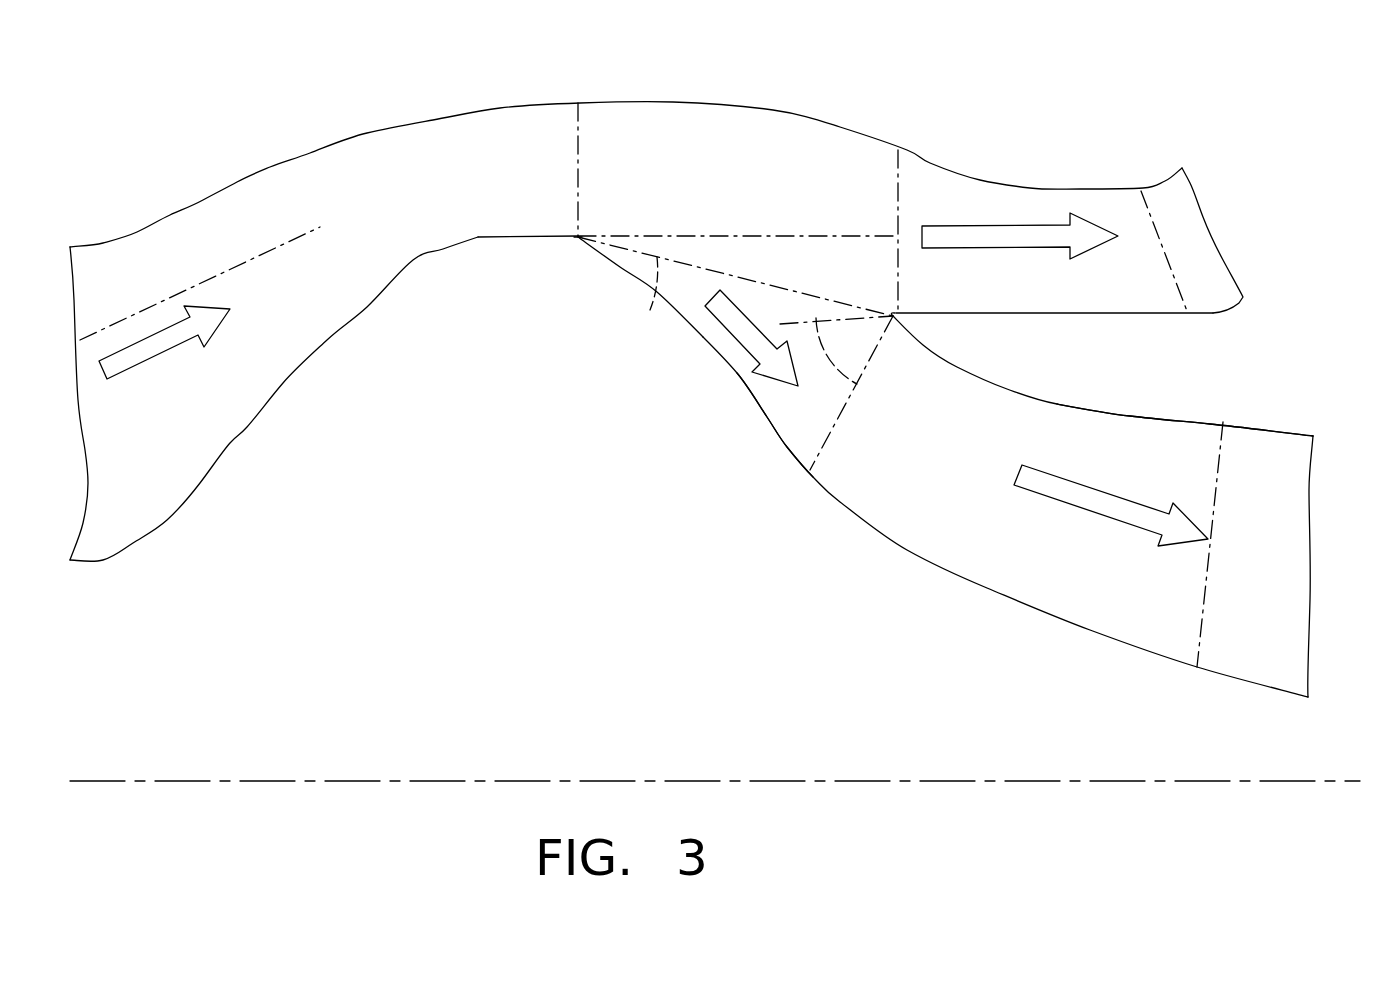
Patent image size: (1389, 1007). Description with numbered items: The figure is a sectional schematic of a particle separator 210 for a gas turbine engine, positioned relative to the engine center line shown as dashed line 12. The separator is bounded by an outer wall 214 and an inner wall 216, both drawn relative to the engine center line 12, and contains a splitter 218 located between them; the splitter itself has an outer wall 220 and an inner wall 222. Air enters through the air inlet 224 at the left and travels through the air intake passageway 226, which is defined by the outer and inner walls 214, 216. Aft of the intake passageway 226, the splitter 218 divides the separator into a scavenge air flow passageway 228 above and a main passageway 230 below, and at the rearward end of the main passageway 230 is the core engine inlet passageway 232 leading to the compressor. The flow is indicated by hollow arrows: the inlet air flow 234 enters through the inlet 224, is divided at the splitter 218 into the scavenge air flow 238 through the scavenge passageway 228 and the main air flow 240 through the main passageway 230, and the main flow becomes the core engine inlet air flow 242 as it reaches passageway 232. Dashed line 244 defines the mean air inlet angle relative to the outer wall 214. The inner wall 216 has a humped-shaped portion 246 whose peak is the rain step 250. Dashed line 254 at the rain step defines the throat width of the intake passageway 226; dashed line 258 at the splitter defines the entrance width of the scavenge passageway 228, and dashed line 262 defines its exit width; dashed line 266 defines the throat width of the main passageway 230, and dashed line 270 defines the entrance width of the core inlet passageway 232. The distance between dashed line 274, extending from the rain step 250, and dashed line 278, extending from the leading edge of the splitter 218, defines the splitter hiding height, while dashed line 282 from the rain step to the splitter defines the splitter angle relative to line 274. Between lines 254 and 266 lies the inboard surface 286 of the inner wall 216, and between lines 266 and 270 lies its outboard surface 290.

The engine center line 12 is at (620, 779).
The particle separator 210 is at (295, 74).
The outer wall 214 is at (443, 113).
The inner wall 216 is at (484, 238).
The splitter 218 is at (1066, 360).
The outer wall of splitter 220 is at (1146, 310).
The inner wall of splitter 222 is at (1170, 420).
The air inlet 224 is at (138, 430).
The air intake passageway 226 is at (420, 244).
The scavenge air flow passageway 228 is at (1118, 188).
The main passageway 230 is at (780, 434).
The core engine inlet passageway 232 is at (1255, 507).
The inlet air flow arrow 234 is at (143, 355).
The scavenge air flow arrow 238 is at (1022, 236).
The main air flow arrow 240 is at (757, 348).
The core engine inlet air flow arrow 242 is at (1118, 517).
The mean air inlet angle line 244 is at (232, 268).
The humped-shaped portion 246 is at (456, 436).
The rain step 250 is at (575, 266).
The throat width line 254 is at (582, 150).
The scavenge entrance width line 258 is at (898, 176).
The scavenge exit width line 262 is at (1165, 251).
The main passageway throat width line 266 is at (838, 428).
The core inlet entrance width line 270 is at (1205, 588).
The rain step reference line 274 is at (733, 236).
The splitter leading edge reference line 278 is at (857, 384).
The splitter angle line 282 is at (651, 305).
The inboard surface 286 is at (705, 335).
The outboard surface 290 is at (989, 587).